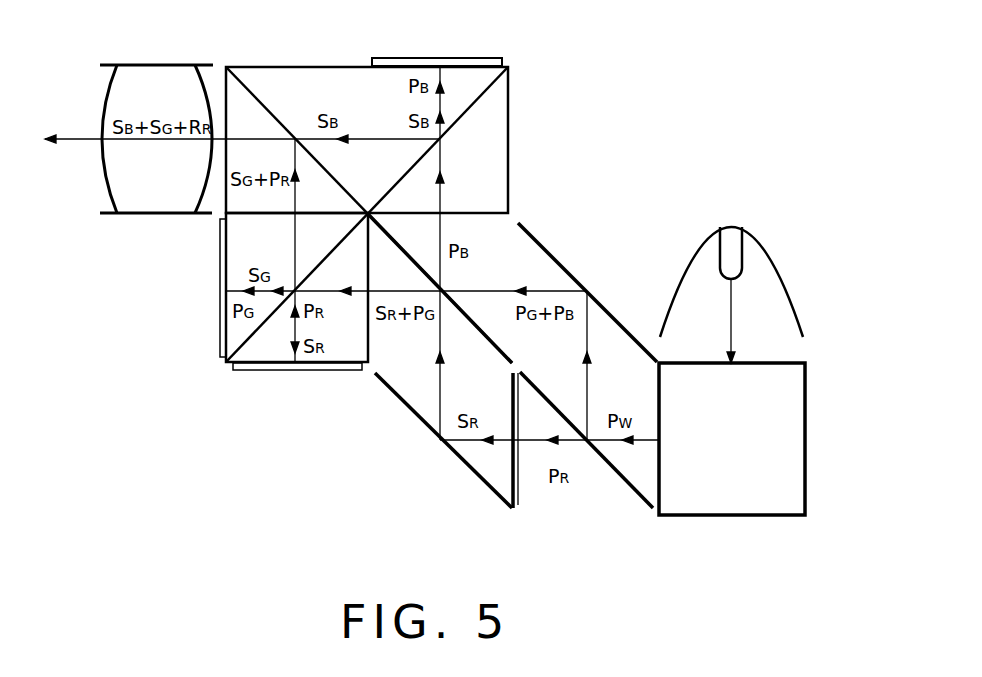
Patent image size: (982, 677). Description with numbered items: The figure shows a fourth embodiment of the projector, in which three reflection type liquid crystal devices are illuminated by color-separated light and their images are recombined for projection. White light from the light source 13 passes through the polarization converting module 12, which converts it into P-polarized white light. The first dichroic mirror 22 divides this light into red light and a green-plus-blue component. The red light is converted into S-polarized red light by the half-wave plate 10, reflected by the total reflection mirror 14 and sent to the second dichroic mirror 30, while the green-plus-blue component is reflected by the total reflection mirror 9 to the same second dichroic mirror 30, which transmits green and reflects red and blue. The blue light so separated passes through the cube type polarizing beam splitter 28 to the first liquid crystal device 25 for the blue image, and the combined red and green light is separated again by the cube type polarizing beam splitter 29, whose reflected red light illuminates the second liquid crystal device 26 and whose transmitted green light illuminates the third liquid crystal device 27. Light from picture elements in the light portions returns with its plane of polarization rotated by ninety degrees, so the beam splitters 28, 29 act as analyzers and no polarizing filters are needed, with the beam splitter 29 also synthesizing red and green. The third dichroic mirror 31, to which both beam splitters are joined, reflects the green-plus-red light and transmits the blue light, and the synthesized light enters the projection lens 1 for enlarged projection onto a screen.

The projection lens 1 is at (133, 215).
The total reflection mirror 9 is at (553, 255).
The λ/2 plate 10 is at (520, 500).
The polarization converting module 12 is at (775, 517).
The light source 13 is at (777, 257).
The total reflection mirror 14 is at (472, 478).
The first dichroic mirror 22 is at (640, 497).
The first reflection type liquid crystal device 25 is at (453, 62).
The second reflection type liquid crystal device 26 is at (275, 372).
The third reflection type liquid crystal device 27 is at (218, 262).
The cube type polarizing beam splitter 28 is at (490, 90).
The cube type polarizing beam splitter 29 is at (224, 347).
The second dichroic mirror 30 is at (478, 325).
The third dichroic mirror 31 is at (243, 78).